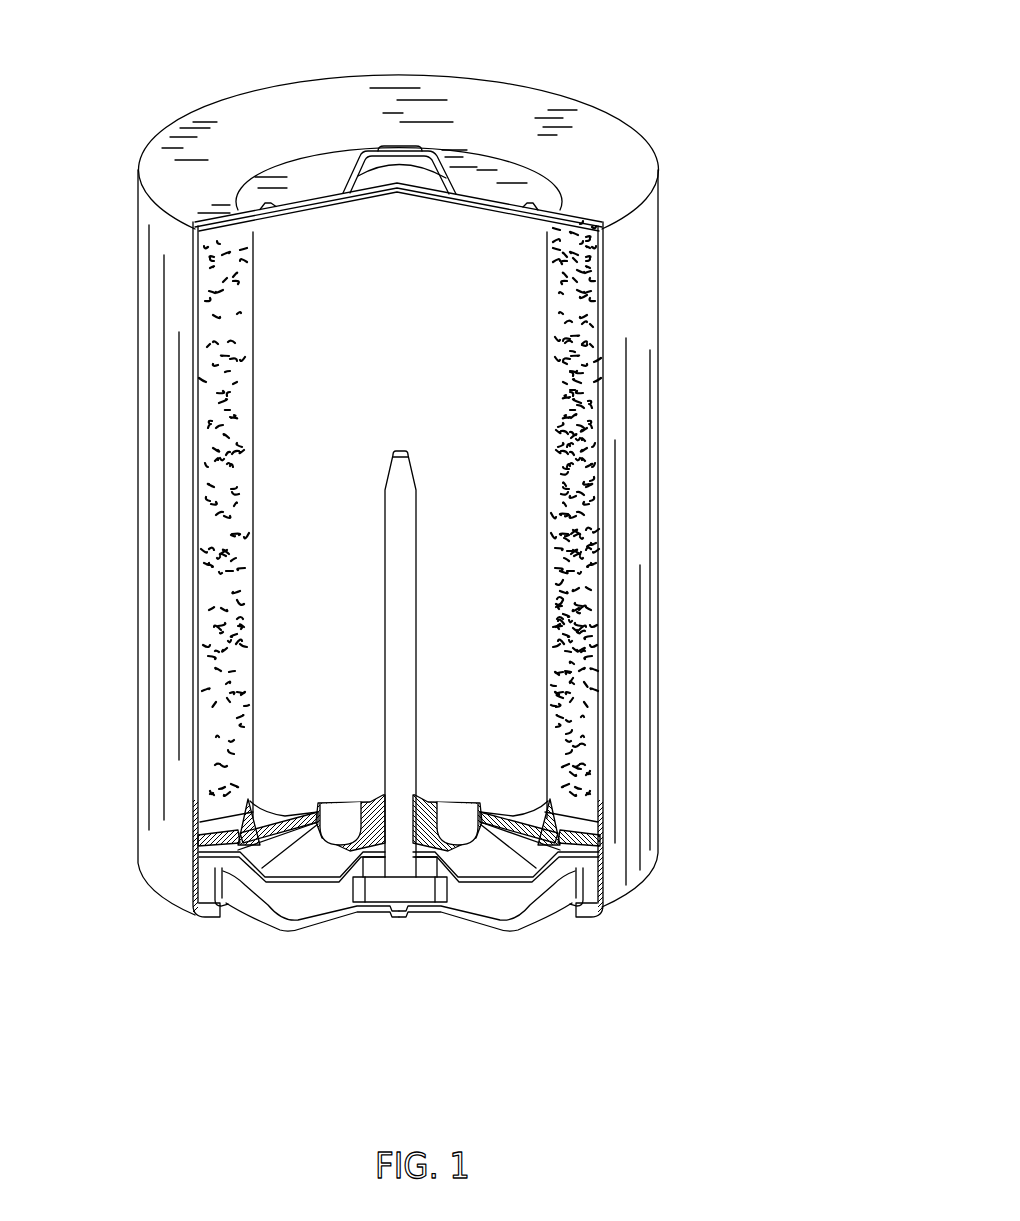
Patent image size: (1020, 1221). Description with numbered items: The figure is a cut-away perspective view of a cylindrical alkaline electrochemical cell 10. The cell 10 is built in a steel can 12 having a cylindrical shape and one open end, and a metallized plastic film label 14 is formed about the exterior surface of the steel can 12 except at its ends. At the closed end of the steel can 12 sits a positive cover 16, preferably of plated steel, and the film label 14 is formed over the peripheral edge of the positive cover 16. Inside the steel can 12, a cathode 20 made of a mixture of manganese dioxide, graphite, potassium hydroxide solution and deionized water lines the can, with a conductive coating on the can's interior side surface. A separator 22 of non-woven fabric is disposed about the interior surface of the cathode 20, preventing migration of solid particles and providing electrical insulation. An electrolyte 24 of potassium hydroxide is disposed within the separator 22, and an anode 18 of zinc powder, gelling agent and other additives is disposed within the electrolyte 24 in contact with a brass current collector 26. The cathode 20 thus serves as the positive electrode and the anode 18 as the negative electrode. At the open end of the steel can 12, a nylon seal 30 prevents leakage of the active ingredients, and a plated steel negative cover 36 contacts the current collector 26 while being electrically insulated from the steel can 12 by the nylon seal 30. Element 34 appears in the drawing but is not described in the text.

The alkaline electrochemical cell 10 is at (529, 58).
The steel can 12 is at (607, 297).
The film label 14 is at (622, 405).
The positive cover 16 is at (323, 182).
The anode 18 is at (510, 530).
The cathode 20 is at (223, 510).
The separator 22 is at (255, 622).
The electrolyte 24 is at (275, 370).
The current collector 26 is at (405, 652).
The nylon seal 30 is at (565, 814).
The bottom cover 34 is at (500, 897).
The negative cover 36 is at (433, 912).